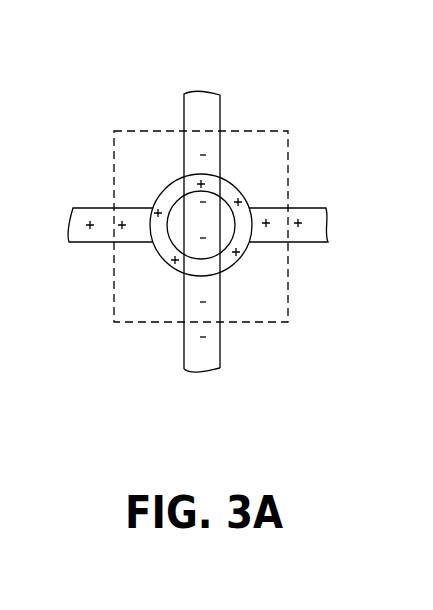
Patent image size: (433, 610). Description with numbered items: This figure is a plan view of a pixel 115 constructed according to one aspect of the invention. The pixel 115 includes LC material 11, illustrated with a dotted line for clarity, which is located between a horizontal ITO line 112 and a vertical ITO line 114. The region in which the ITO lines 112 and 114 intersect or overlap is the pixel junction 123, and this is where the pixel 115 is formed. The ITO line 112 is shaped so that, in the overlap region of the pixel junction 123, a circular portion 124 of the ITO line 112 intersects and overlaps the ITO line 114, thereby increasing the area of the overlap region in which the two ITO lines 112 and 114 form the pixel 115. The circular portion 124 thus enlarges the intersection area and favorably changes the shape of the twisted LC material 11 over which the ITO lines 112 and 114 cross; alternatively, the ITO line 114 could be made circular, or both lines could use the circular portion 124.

The pixel 115 is at (114, 19).
The LC material 11 is at (288, 150).
The ITO line 112 is at (92, 207).
The ITO line 114 is at (219, 110).
The circular portion 124 is at (159, 176).
The pixel junction 123 is at (251, 279).